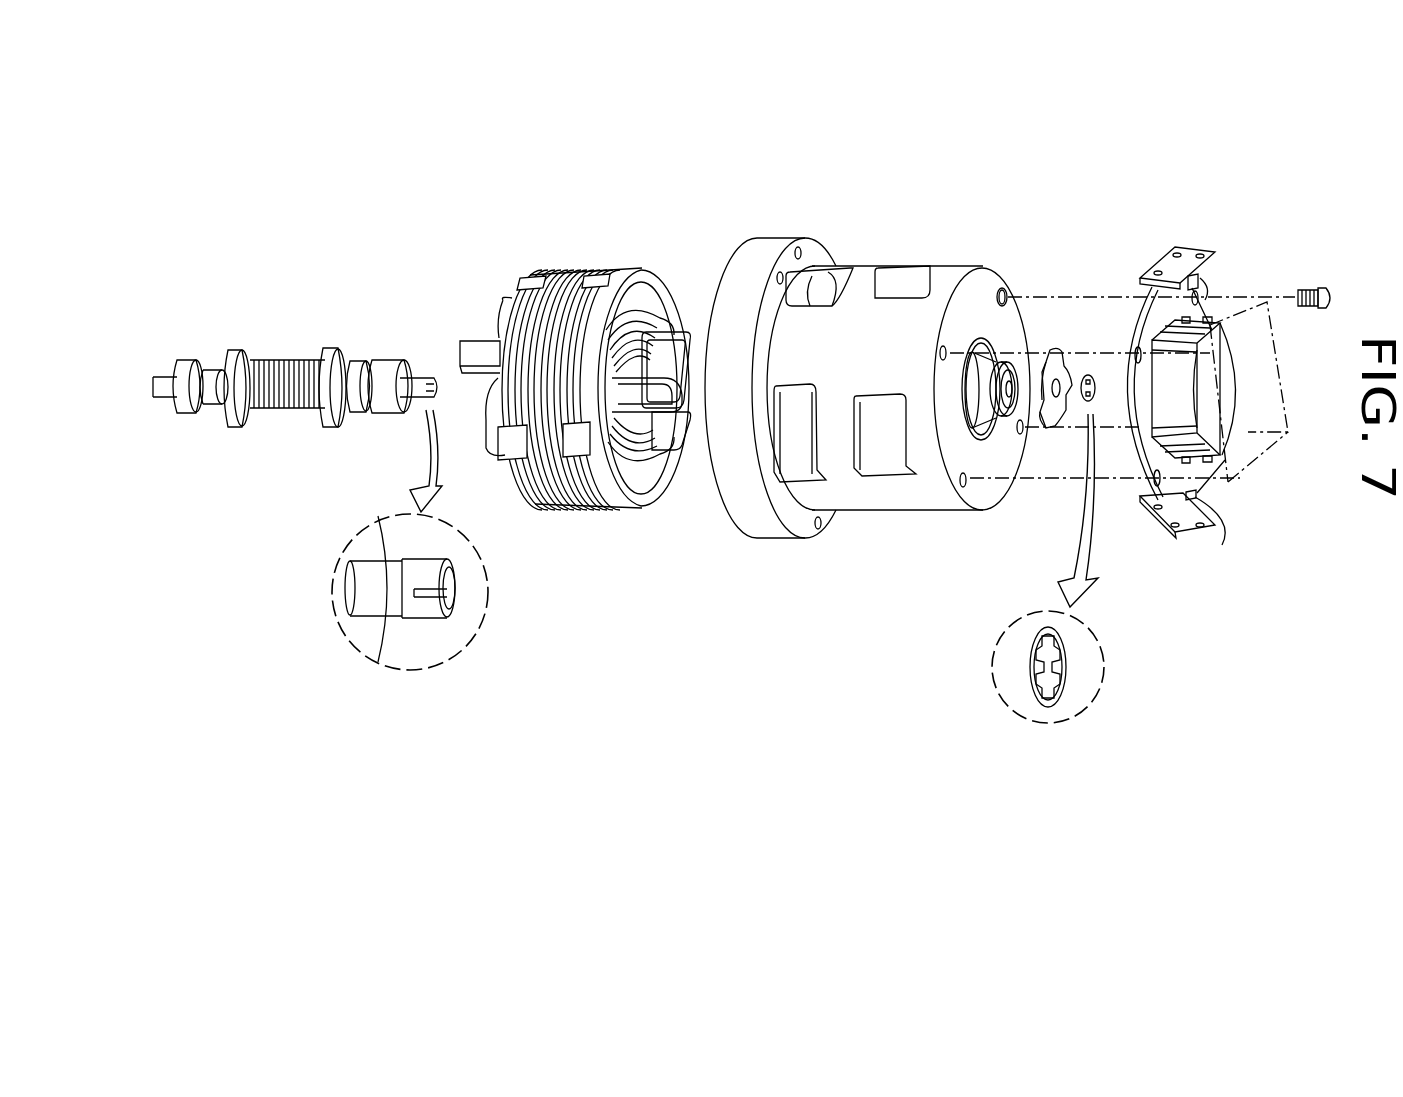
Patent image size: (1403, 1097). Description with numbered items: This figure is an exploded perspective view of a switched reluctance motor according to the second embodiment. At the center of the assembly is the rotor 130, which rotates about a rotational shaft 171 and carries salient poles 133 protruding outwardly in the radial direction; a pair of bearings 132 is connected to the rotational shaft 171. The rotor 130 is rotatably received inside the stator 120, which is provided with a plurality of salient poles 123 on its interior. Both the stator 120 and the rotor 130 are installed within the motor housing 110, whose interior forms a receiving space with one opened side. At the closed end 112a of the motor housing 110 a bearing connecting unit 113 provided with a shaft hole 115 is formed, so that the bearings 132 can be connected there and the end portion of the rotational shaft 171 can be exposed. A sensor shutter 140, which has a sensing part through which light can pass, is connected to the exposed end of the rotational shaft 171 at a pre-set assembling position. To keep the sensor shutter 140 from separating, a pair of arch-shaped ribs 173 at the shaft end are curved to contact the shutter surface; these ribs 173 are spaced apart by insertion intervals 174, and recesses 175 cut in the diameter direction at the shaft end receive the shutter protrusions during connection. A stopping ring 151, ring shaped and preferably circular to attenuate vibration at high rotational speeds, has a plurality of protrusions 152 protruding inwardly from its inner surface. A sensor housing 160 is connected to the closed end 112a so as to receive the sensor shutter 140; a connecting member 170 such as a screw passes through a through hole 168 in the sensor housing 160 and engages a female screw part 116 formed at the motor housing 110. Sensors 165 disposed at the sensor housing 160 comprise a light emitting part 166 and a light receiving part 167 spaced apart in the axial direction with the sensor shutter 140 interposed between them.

The motor housing 110 is at (867, 280).
The closed end 112a is at (991, 298).
The bearing connecting unit 113 is at (988, 410).
The shaft hole 115 is at (1011, 392).
The female screw part 116 is at (1009, 300).
The stator 120 is at (557, 256).
The salient poles 123 is at (660, 330).
The rotor 130 is at (309, 298).
The bearings 132 is at (193, 366).
The salient poles 133 is at (266, 378).
The sensor shutter 140 is at (1073, 344).
The stopping ring 151 is at (1034, 676).
The protrusions 152 is at (1036, 648).
The sensor housing 160 is at (1224, 443).
The sensors 165 is at (1194, 236).
The light emitting part 166 is at (1156, 524).
The light receiving part 167 is at (1205, 530).
The through hole 168 is at (1151, 298).
The connecting member 170 is at (1324, 290).
The rotational shaft 171 is at (218, 375).
The ribs 173 is at (429, 376).
The insertion intervals 174 is at (418, 597).
The recesses 175 is at (430, 618).